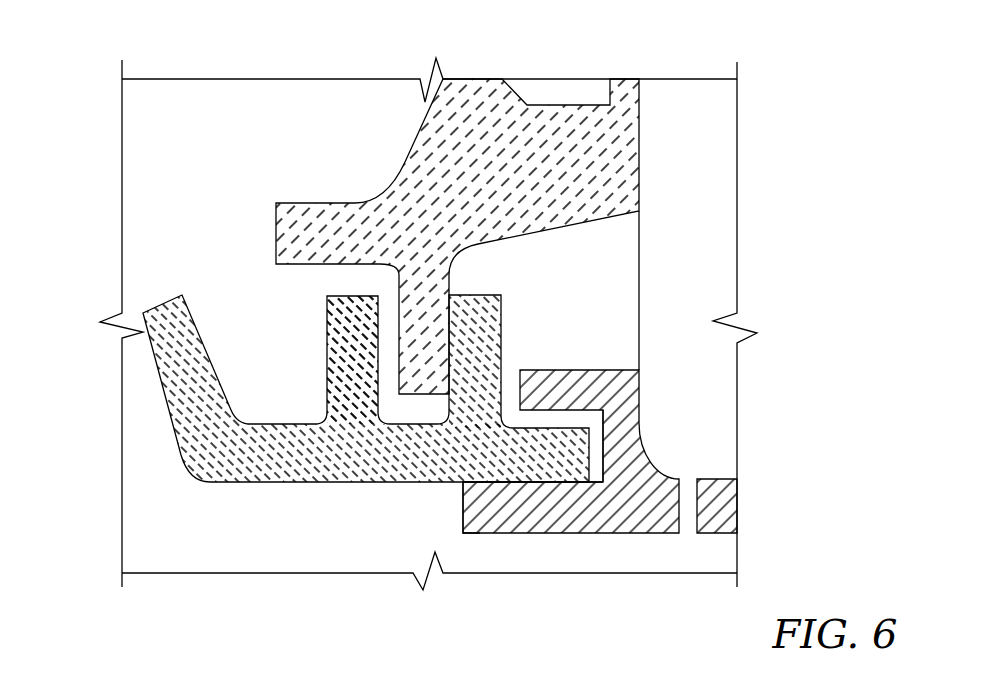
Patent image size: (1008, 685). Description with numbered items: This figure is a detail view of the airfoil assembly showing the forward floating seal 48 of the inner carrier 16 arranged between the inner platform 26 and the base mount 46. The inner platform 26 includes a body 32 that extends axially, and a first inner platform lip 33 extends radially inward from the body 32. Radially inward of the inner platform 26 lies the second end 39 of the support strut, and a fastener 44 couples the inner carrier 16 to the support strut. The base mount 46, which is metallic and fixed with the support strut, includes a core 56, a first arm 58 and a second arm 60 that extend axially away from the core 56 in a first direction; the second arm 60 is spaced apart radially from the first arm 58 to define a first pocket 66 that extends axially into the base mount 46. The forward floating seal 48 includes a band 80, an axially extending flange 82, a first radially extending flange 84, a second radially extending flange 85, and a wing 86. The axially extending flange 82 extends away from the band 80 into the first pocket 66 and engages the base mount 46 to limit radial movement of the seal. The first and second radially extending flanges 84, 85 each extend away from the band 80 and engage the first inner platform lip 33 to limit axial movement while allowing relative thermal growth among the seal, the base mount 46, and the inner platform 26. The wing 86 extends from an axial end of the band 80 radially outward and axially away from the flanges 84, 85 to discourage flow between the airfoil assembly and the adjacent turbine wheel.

The inner carrier 16 is at (167, 560).
The inner platform 26 is at (322, 180).
The body 32 is at (454, 198).
The first inner platform lip 33 is at (395, 286).
The second end 39 is at (742, 432).
The fastener 44 is at (716, 536).
The base mount 46 is at (637, 447).
The first floating seal 48 is at (118, 390).
The core 56 is at (651, 536).
The first arm 58 is at (575, 366).
The second arm 60 is at (459, 539).
The first pocket 66 is at (571, 423).
The band 80 is at (406, 353).
The axially extending flange 82 is at (548, 485).
The first radially extending flange 84 is at (507, 293).
The second radially extending flange 85 is at (325, 335).
The wing 86 is at (165, 412).